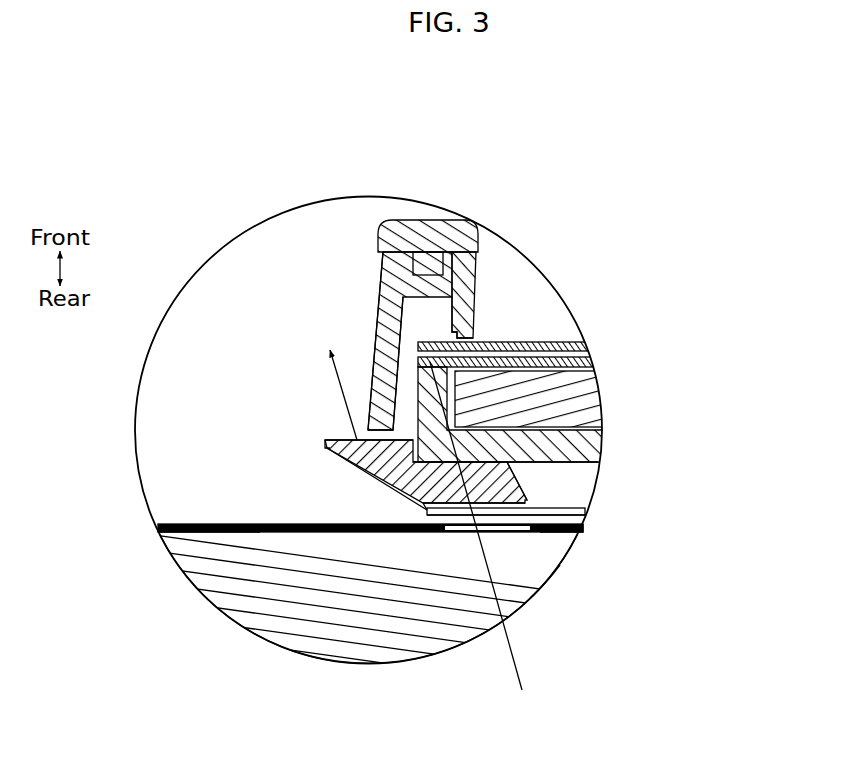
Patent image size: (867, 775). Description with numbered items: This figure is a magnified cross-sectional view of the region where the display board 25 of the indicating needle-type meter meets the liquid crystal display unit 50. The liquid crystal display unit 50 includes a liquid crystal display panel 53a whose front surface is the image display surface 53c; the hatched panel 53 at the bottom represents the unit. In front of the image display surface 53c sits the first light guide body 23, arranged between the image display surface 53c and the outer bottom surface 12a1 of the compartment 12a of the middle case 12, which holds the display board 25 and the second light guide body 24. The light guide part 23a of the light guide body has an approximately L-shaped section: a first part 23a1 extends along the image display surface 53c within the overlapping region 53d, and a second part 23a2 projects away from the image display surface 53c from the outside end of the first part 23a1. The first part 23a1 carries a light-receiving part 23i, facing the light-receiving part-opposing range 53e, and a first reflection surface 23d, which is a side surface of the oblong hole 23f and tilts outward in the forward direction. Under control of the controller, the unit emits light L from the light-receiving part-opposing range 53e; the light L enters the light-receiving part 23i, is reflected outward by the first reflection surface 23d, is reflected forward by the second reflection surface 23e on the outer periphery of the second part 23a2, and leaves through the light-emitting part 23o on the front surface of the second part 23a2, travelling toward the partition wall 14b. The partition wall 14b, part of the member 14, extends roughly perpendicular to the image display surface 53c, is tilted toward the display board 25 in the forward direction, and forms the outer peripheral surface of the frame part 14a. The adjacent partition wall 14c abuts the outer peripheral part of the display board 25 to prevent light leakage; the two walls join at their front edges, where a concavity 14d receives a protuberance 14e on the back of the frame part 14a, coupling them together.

The middle case 12 is at (605, 426).
The compartment 12a is at (517, 342).
The outer bottom surface 12a1 is at (598, 462).
The clip 14 is at (434, 276).
The frame part 14a is at (407, 236).
The partition wall 14b is at (375, 328).
The partition wall 14c is at (457, 313).
The concavity 14d is at (382, 277).
The protuberance 14e is at (428, 272).
The first light guide body 23 is at (497, 456).
The light guide part 23a is at (545, 507).
The first part 23a1 is at (465, 512).
The second part 23a2 is at (353, 442).
The first reflection surface 23d is at (508, 466).
The second reflection surface 23e is at (397, 488).
The oblong hole 23f is at (557, 485).
The light-receiving part 23i is at (479, 512).
The light-emitting part 23o is at (337, 438).
The second light guide body 24 is at (598, 397).
The display board 25 is at (565, 342).
The liquid crystal display unit 50 is at (255, 524).
The panel 53 is at (370, 629).
The liquid crystal display panel 53a is at (220, 578).
The image display surface 53c is at (212, 524).
The overlapping region 53d is at (582, 533).
The light-receiving part-opposing range 53e is at (545, 583).
The light L is at (480, 540).